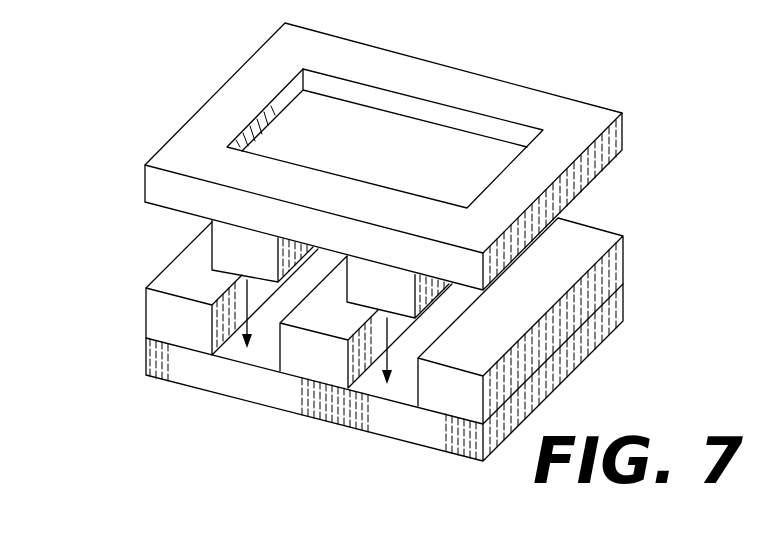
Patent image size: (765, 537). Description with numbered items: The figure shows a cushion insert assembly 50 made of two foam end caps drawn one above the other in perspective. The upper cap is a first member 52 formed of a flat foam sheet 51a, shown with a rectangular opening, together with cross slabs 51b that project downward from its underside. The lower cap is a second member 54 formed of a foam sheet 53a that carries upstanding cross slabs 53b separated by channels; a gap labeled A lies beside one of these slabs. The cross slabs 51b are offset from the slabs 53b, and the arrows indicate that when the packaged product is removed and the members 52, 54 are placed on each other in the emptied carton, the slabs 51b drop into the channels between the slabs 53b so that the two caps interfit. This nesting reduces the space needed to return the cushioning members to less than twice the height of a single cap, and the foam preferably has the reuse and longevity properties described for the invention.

The cushion insert assembly 50 is at (76, 231).
The foam sheet 51a is at (228, 112).
The cross slabs 51b is at (228, 242).
The first member 52 is at (644, 148).
The foam sheet 53a is at (430, 432).
The cross slabs 53b is at (157, 324).
The second member 54 is at (646, 271).
The left face of raised block A is at (145, 302).